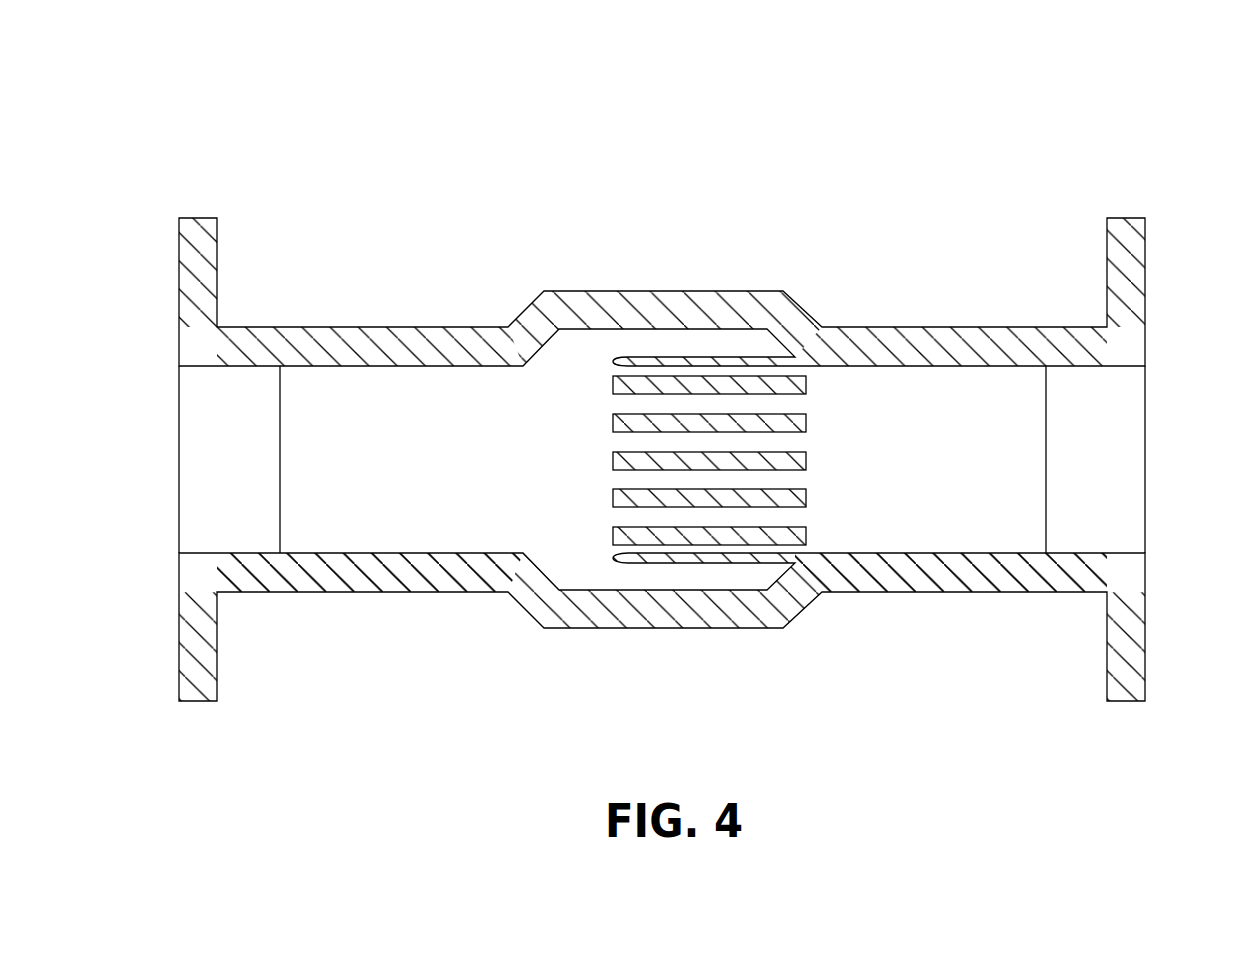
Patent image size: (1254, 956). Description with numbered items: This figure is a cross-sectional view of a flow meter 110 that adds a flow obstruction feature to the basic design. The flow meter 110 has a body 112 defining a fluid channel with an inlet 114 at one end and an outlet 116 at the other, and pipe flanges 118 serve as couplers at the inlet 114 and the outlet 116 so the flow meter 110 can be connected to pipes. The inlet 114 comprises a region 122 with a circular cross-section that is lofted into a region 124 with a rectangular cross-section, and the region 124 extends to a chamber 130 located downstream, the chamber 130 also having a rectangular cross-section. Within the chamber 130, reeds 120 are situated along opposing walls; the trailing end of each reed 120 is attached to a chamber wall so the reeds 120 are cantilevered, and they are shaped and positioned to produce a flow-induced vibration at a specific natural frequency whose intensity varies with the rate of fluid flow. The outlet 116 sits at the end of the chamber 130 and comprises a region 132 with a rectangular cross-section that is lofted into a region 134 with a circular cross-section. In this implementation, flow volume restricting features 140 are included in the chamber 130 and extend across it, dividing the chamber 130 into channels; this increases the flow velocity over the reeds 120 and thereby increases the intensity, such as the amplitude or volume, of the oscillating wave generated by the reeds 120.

The flow meter 110 is at (920, 168).
The body 112 is at (548, 318).
The inlet 114 is at (168, 442).
The outlet 116 is at (1157, 464).
The pipe flanges 118 is at (203, 248).
The reed 120 is at (682, 360).
The region with circular cross-section 122 is at (210, 495).
The region with rectangular shaped cross-section 124 is at (445, 527).
The chamber 130 is at (586, 478).
The region comprising a rectangular cross-section 132 is at (872, 530).
The region with circular cross-section 134 is at (1115, 502).
The flow volume restricting features 140 is at (803, 457).